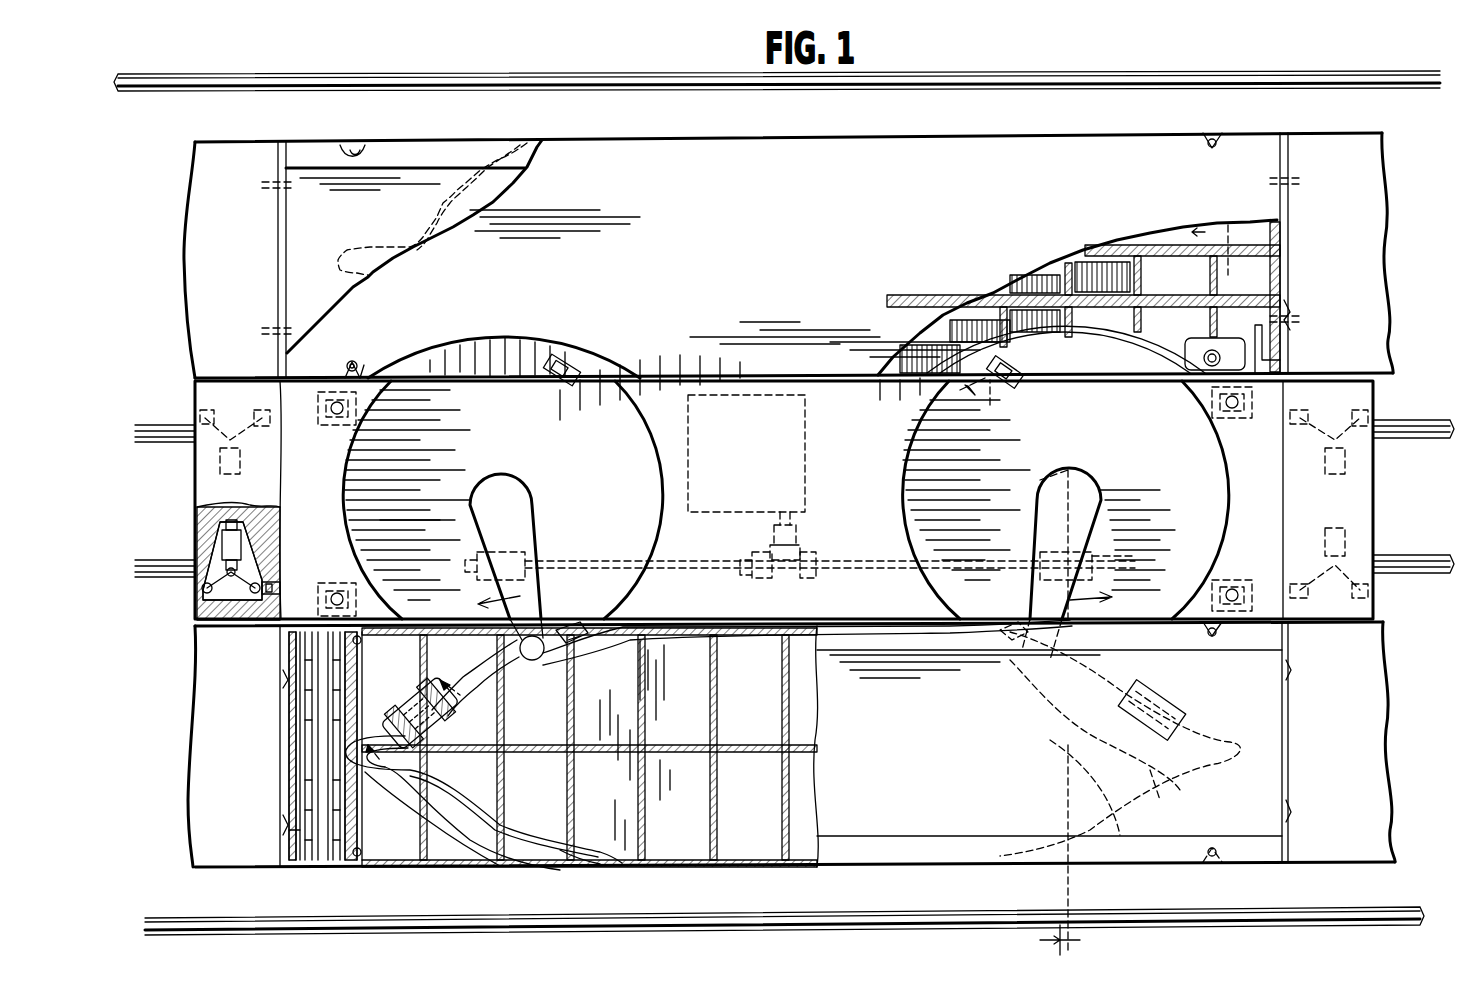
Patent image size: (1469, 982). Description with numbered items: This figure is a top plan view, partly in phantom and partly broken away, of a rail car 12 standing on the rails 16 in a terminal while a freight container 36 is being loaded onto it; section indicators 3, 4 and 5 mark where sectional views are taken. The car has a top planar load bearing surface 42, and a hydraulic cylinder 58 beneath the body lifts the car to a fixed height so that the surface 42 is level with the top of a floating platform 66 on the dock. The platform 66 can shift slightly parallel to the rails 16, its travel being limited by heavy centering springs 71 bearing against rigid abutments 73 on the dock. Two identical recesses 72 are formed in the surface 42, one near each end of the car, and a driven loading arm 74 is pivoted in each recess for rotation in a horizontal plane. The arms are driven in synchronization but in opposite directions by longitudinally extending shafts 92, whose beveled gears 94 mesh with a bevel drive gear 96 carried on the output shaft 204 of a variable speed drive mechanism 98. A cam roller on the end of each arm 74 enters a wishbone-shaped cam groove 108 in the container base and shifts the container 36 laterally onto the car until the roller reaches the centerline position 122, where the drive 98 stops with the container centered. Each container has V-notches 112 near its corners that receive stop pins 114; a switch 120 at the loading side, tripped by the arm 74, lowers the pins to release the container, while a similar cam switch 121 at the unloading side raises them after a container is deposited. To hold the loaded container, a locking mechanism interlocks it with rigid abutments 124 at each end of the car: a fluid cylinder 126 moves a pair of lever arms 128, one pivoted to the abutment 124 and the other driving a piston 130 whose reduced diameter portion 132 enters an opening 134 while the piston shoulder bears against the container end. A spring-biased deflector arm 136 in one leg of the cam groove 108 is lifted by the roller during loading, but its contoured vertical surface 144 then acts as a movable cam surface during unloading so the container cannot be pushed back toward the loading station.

The rail car 12 is at (1390, 506).
The railroad tracks or rails 16 is at (1450, 424).
The freight container 36 is at (437, 183).
The top planar load bearing surface 42 is at (860, 436).
The hydraulic cylinder 58 is at (316, 408).
The floating platform 66 is at (658, 148).
The centering springs 71 is at (1292, 318).
The recess 72 is at (640, 438).
The rigid abutments 73 is at (1290, 280).
The driven loading arm 74 is at (484, 512).
The longitudinally extending shaft 92 is at (708, 564).
The beveled gears 94 is at (762, 574).
The bevel drive gear 96 is at (798, 530).
The variable speed drive mechanism 98 is at (806, 472).
The cam groove 108 is at (576, 862).
The V-notch 112 is at (360, 376).
The stop pins 114 is at (1213, 140).
The switch 120 is at (605, 612).
The cam switch 121 is at (562, 364).
The centerline position 122 is at (414, 788).
The rigid abutments 124 is at (200, 482).
The fluid cylinder 126 is at (222, 546).
The lever arms 128 is at (202, 596).
The piston 130 is at (275, 432).
The reduced diameter portion 132 is at (284, 588).
The opening 134 is at (290, 833).
The deflector arm 136 is at (398, 696).
The contoured vertical surface 144 is at (430, 768).
The output shaft 204 is at (780, 524).
The section line 3 is at (1124, 581).
The section line 4 is at (418, 724).
The section line 5 is at (1002, 397).